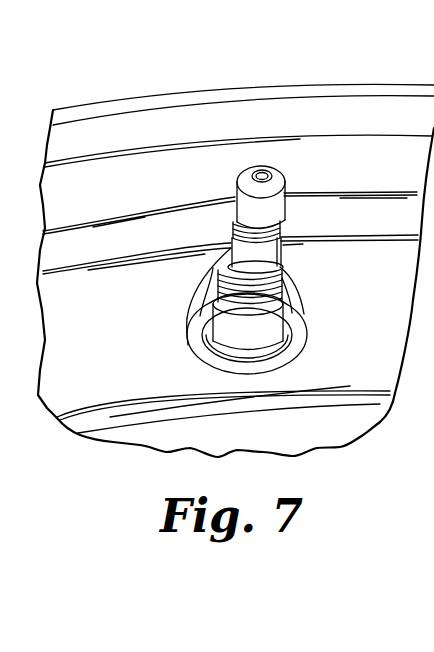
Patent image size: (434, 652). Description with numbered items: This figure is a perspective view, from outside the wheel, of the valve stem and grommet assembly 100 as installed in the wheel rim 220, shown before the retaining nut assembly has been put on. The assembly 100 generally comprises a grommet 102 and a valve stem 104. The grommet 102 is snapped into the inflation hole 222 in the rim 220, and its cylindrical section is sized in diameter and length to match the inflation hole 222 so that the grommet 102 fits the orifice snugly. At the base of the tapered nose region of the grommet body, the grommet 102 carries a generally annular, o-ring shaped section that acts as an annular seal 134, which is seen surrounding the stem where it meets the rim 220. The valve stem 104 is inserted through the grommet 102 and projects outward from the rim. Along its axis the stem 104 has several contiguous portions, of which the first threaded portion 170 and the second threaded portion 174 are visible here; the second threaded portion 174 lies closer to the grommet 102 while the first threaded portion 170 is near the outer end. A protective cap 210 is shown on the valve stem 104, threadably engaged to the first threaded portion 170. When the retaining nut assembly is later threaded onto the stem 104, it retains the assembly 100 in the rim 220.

The valve stem and grommet assembly 100 is at (218, 233).
The grommet 102 is at (305, 325).
The valve stem 104 is at (283, 250).
The annular seal 134 is at (297, 360).
The first threaded portion 170 is at (283, 228).
The second threaded portion 174 is at (220, 284).
The protective cap 210 is at (283, 166).
The wheel rim 220 is at (380, 85).
The inflation hole 222 is at (184, 350).